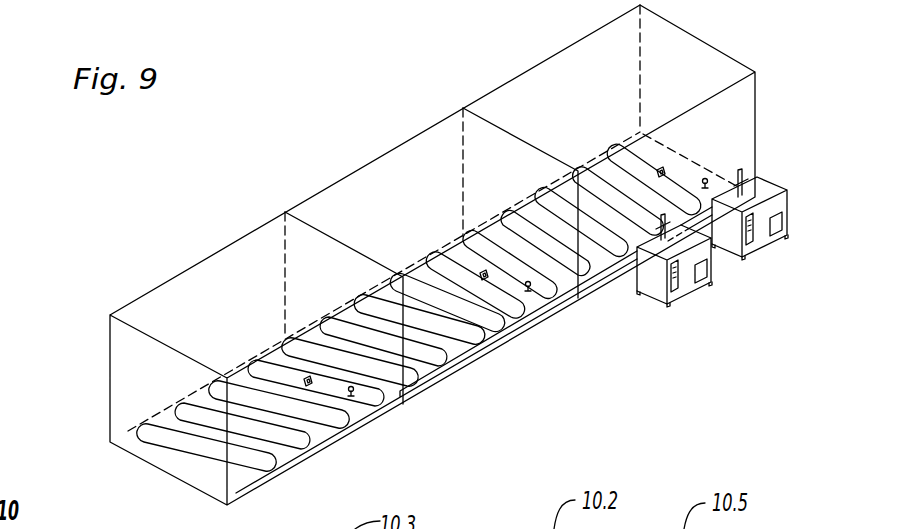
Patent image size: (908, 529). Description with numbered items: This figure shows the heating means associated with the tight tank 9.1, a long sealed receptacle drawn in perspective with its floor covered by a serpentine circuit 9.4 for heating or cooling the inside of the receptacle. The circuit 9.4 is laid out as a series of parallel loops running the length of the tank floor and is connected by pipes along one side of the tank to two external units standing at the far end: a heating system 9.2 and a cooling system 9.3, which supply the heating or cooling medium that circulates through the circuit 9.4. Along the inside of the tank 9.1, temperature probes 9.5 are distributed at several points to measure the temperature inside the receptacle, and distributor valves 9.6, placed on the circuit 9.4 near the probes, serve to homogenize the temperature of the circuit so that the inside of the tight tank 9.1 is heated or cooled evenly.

The tight tank 9.1 is at (372, 158).
The heating system 9.2 is at (693, 293).
The cooling system 9.3 is at (773, 250).
The circuit for heating or cooling the inside of the receptacle 9.4 is at (461, 347).
The temperature probes 9.5 is at (316, 395).
The distributor valves 9.6 is at (361, 411).